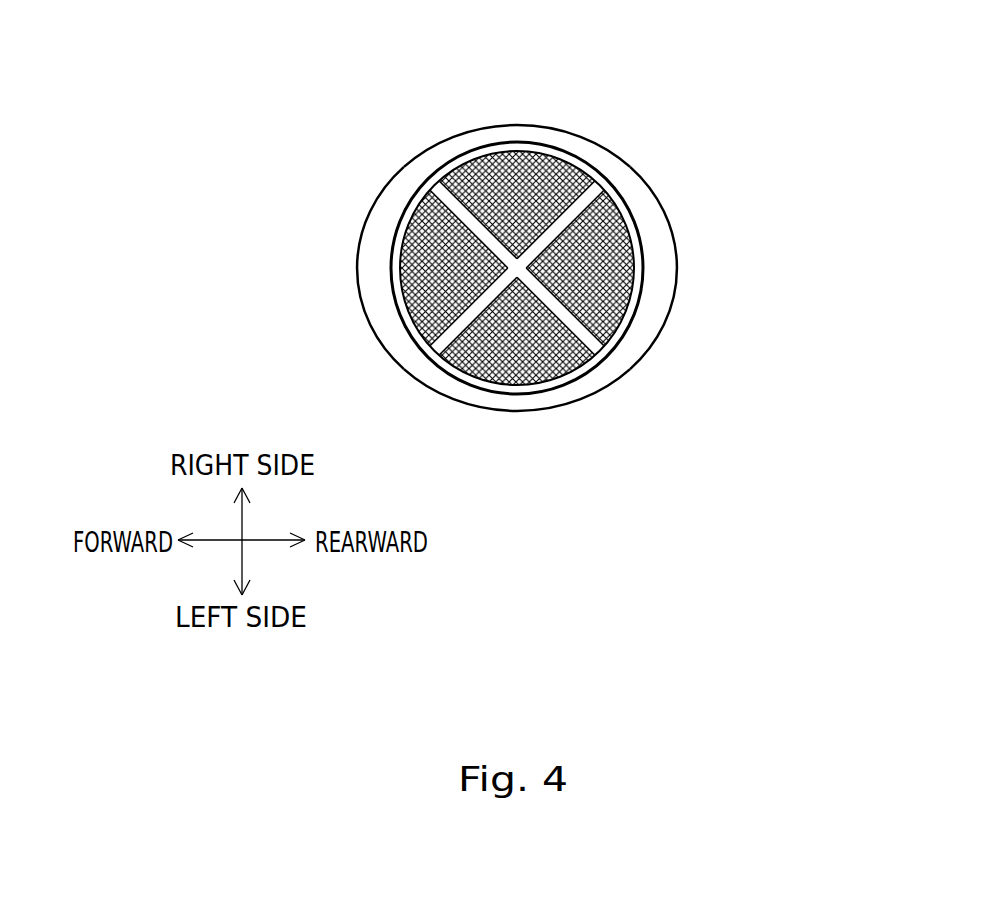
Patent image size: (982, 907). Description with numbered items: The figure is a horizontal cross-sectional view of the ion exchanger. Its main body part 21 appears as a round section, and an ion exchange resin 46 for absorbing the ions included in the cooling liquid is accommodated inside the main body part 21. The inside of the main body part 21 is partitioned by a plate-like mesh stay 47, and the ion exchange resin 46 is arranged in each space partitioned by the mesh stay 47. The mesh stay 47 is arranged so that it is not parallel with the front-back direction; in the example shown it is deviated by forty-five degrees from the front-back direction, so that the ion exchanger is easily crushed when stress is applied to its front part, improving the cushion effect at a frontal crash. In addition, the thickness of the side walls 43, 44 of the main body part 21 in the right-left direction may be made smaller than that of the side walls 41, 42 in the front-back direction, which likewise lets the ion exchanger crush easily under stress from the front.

The main body part 21 is at (691, 87).
The side wall 41 is at (367, 265).
The side wall 42 is at (667, 267).
The side wall 43 is at (508, 134).
The side wall 44 is at (508, 400).
The ion exchange resin 46 is at (618, 208).
The mesh stay 47 is at (592, 345).